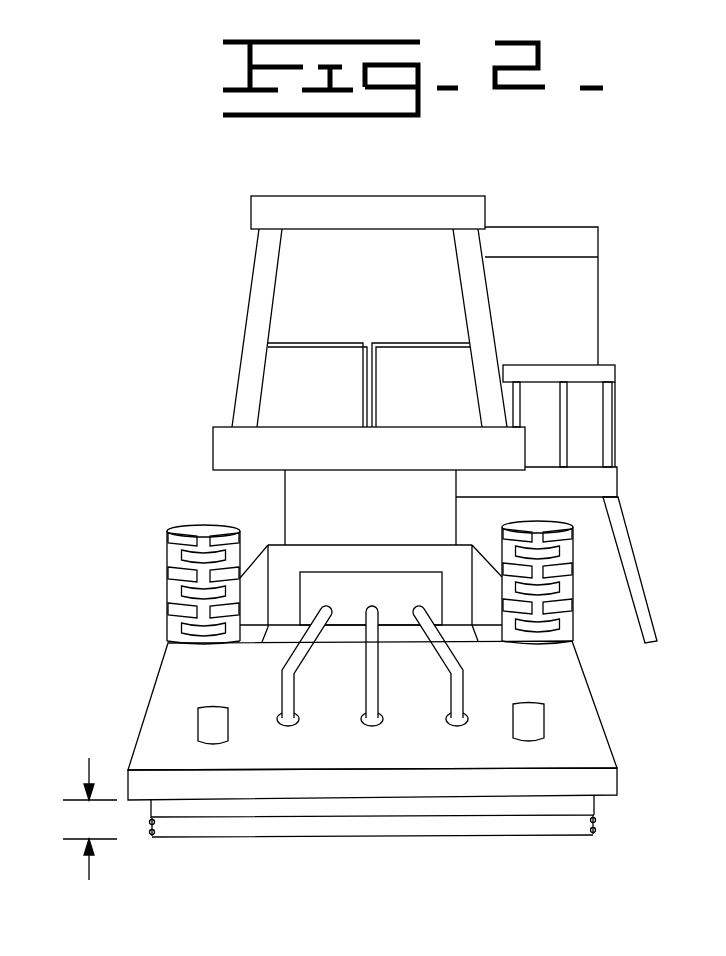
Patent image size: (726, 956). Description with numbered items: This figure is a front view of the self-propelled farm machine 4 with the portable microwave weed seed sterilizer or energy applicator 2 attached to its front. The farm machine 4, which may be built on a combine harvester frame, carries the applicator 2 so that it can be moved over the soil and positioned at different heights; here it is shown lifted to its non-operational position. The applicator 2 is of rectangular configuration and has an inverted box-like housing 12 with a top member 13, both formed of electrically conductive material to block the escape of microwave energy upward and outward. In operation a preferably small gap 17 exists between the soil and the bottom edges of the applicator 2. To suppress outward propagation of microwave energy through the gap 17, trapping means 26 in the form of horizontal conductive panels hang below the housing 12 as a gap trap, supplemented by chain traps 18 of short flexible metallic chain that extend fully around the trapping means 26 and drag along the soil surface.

The self-propelled farm machine 4 is at (498, 197).
The portable microwave weed seed sterilizer or energy applicator 2 is at (132, 723).
The top member 13 is at (592, 733).
The inverted box-like housing 12 is at (598, 781).
The gap 17 is at (90, 819).
The trapping means 26 is at (483, 822).
The chain traps 18 is at (597, 831).